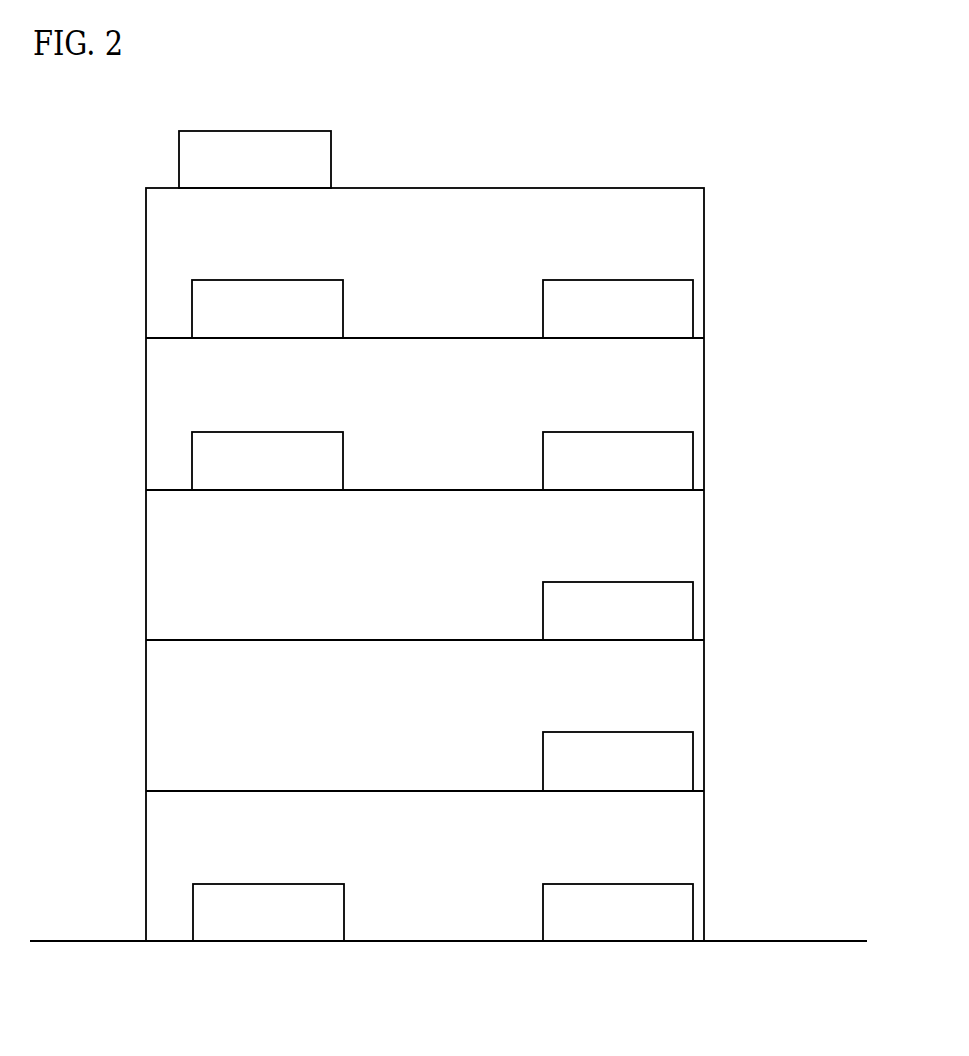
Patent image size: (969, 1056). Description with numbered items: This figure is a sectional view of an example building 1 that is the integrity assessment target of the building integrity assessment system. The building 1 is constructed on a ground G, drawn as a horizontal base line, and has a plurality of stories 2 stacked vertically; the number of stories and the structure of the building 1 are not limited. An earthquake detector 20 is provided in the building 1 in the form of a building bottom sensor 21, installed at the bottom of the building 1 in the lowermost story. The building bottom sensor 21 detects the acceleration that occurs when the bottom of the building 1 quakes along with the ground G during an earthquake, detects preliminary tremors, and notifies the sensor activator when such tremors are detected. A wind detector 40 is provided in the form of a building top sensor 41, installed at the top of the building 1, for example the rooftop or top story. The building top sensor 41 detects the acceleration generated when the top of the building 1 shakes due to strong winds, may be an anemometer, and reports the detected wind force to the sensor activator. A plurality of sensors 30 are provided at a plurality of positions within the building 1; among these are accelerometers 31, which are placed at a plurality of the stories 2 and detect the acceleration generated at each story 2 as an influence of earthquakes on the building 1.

The building 1 is at (670, 174).
The stories 2 is at (163, 296).
The earthquake detector 20 is at (326, 890).
The building bottom sensor 21 is at (344, 915).
The sensors 30 is at (343, 313).
The accelerometers 31 is at (693, 310).
The wind detector 40 is at (313, 138).
The building top sensor 41 is at (331, 162).
The ground G is at (792, 941).